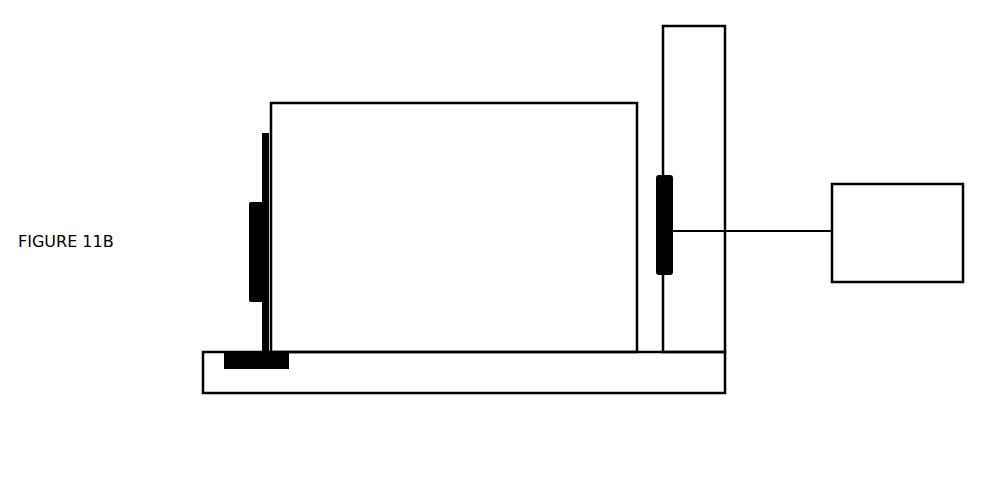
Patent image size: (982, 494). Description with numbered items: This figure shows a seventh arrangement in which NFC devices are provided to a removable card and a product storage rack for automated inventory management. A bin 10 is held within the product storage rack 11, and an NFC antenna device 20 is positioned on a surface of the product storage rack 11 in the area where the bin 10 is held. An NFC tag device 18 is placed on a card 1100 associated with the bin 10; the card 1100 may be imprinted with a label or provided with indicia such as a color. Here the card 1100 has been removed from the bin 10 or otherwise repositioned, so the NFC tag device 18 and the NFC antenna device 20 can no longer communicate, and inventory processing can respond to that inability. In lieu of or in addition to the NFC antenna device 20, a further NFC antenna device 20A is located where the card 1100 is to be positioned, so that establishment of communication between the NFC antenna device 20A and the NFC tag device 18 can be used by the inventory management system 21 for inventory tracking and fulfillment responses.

The bin 10 is at (483, 240).
The card 1100 is at (275, 192).
The product storage rack 11 is at (745, 192).
The NFC tag device 18 is at (277, 260).
The NFC antenna device 20 is at (675, 257).
The NFC antenna device 20A is at (250, 370).
The system 21 is at (873, 183).